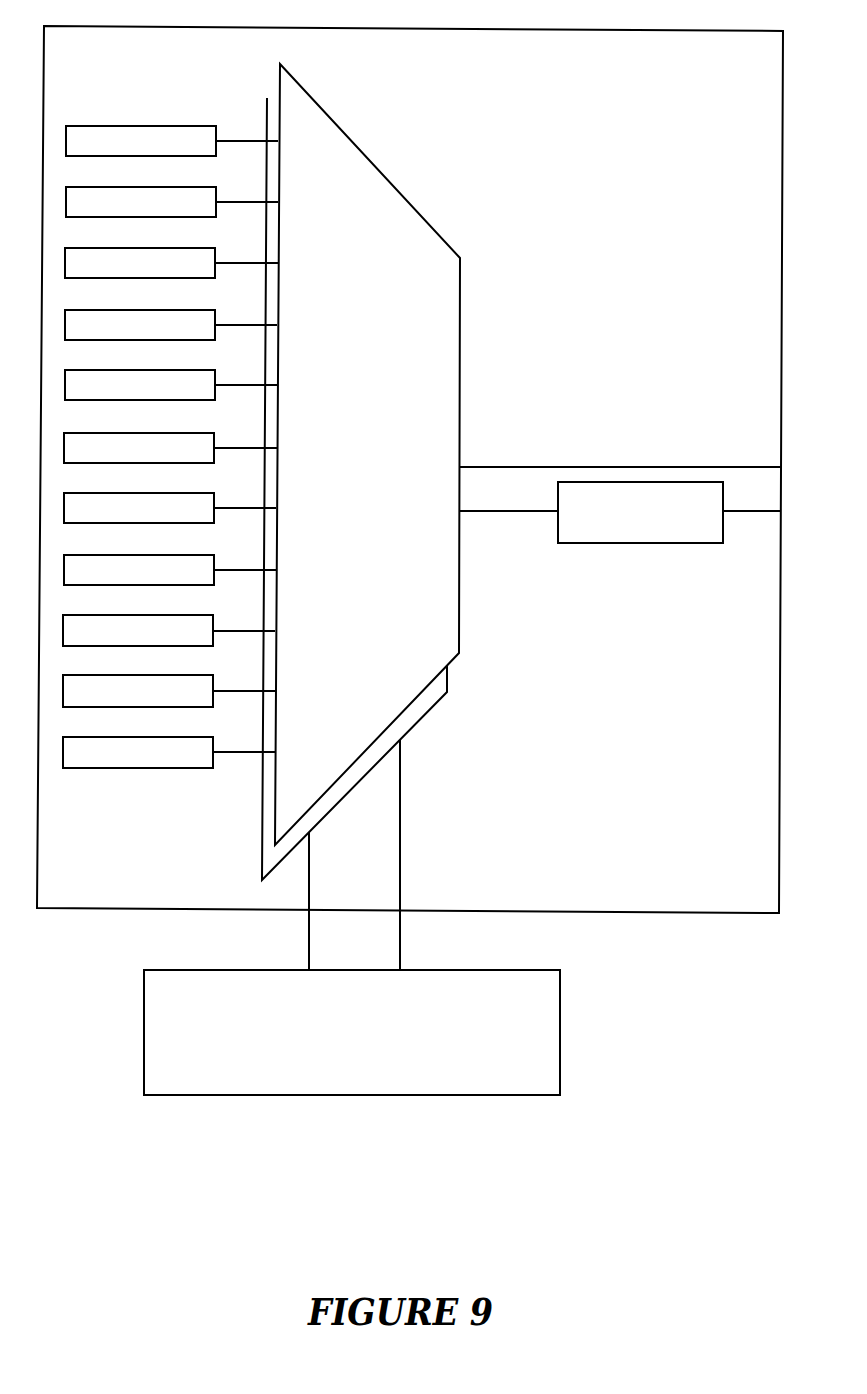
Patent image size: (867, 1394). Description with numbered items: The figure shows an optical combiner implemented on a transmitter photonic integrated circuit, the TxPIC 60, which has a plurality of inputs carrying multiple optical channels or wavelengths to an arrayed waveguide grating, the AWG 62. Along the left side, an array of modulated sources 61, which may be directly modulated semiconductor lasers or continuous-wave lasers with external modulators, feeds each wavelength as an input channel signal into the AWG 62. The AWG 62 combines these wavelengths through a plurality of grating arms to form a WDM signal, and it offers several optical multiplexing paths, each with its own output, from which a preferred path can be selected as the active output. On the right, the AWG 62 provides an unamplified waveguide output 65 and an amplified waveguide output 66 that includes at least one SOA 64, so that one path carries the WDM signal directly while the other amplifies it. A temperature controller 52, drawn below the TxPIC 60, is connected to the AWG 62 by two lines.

The TxPIC 60 is at (410, 469).
The modulated sources 61 is at (173, 138).
The AWG 62 is at (361, 472).
The SOA 64 is at (640, 512).
The unamplified waveguide output 65 is at (727, 465).
The amplified waveguide output 66 is at (513, 511).
The temperature controller 52 is at (352, 917).